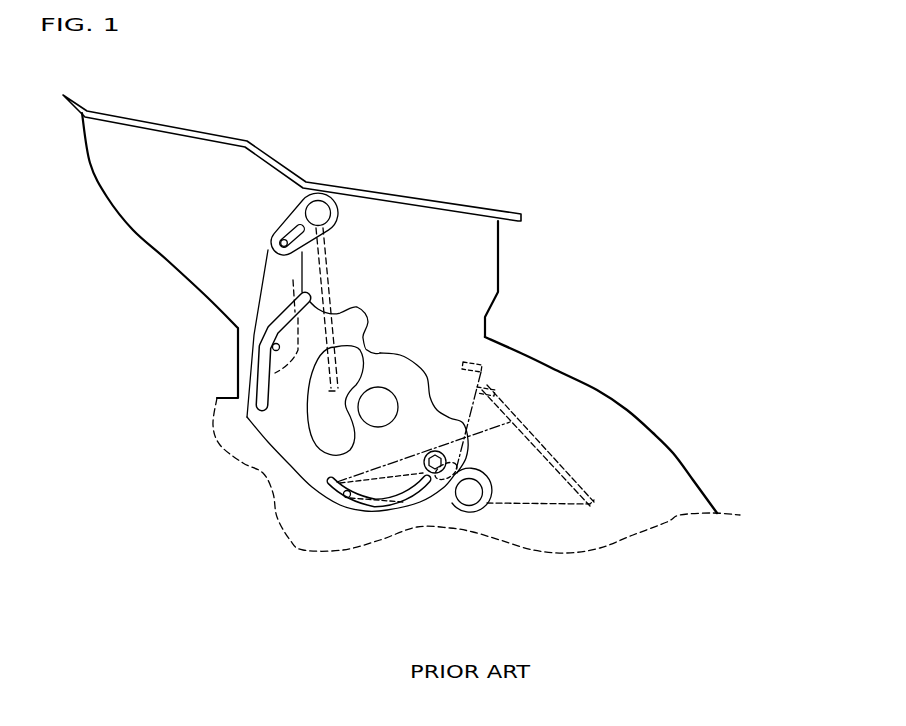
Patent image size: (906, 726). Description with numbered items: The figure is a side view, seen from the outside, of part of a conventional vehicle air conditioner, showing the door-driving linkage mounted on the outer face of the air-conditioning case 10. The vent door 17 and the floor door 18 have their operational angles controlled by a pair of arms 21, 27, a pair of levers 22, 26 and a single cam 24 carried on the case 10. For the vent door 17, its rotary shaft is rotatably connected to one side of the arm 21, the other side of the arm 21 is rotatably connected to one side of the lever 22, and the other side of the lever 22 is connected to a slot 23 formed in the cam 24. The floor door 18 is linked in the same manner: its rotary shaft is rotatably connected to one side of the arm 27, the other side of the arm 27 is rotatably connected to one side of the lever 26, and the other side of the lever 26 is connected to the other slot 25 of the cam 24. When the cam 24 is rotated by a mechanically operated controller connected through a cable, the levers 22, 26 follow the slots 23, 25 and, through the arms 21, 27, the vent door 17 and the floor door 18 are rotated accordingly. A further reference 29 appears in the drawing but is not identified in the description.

The air-conditioning case 10 is at (690, 450).
The vent door 17 is at (330, 277).
The floor door 18 is at (537, 437).
The arm 21 is at (298, 225).
The lever 22 is at (277, 283).
The slot 23 is at (263, 395).
The cam 24 is at (391, 362).
The slot 25 is at (385, 507).
The lever 26 is at (388, 372).
The arm 27 is at (464, 500).
The center hole 29 is at (373, 400).